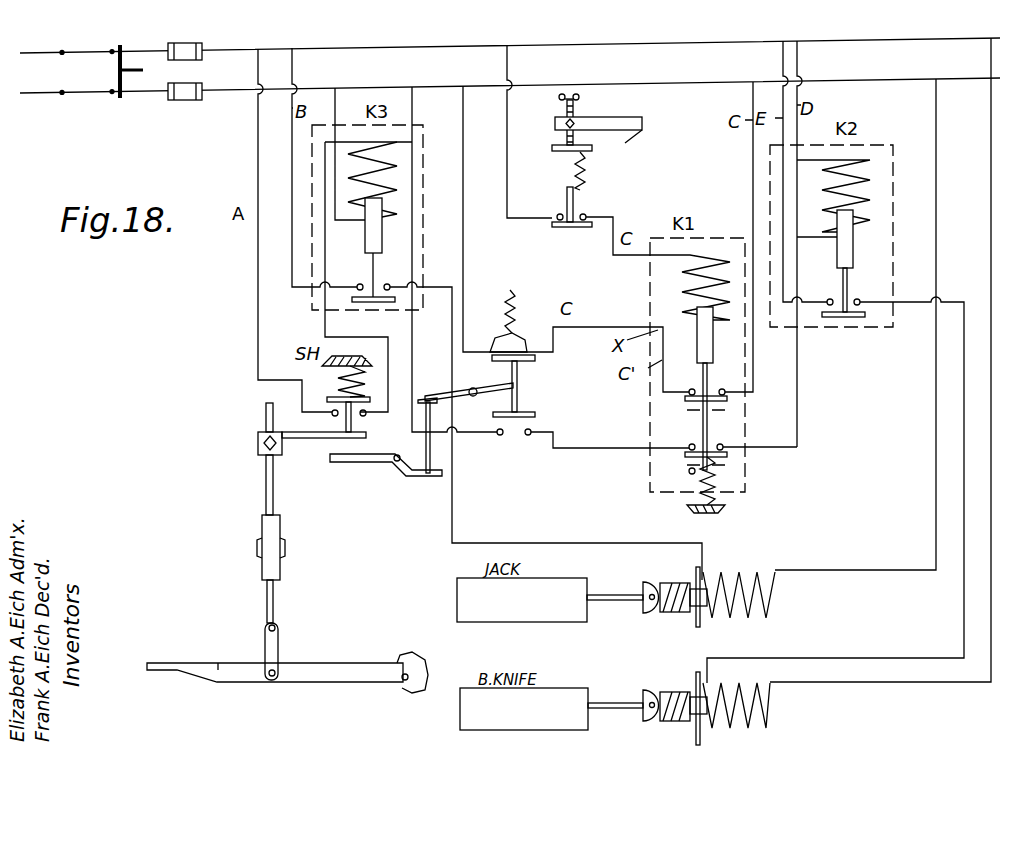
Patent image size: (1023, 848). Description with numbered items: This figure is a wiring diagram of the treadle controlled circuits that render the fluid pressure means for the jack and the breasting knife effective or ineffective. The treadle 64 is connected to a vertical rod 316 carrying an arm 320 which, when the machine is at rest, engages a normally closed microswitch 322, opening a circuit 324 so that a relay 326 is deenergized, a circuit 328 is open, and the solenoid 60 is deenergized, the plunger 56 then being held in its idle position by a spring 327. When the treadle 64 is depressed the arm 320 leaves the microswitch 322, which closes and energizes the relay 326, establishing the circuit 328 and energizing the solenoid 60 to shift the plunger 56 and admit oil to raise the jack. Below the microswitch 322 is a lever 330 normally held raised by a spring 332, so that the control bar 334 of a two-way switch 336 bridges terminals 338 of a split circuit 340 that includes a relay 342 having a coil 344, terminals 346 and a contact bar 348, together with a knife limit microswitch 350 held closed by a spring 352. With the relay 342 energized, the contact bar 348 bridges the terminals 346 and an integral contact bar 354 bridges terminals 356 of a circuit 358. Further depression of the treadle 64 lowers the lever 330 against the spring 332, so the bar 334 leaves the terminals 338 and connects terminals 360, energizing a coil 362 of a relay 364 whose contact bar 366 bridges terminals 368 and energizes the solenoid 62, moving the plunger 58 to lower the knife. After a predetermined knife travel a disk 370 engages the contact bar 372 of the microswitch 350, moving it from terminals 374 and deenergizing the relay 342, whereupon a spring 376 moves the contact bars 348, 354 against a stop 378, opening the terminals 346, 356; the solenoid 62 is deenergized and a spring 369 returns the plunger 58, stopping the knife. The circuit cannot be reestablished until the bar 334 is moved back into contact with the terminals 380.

The circuit 324 is at (258, 207).
The circuit 328 is at (292, 135).
The relay 326 is at (423, 203).
The terminals 360 is at (500, 436).
The microswitch 322 is at (382, 383).
The arm 320 is at (330, 440).
The vertical rod 316 is at (268, 484).
The treadle 64 is at (310, 683).
The lever 330 is at (357, 465).
The terminals 338 is at (498, 321).
The spring 332 is at (515, 308).
The control bar 334 is at (536, 359).
The split circuit 340 is at (507, 103).
The two-way switch 336 is at (538, 453).
The circuit 358 is at (603, 450).
The terminals 380 is at (644, 129).
The disk 370 is at (588, 151).
The spring 352 is at (575, 180).
The terminals 374 is at (568, 215).
The contact bar 372 is at (555, 229).
The knife limit microswitch 350 is at (527, 239).
The relay 342 is at (660, 238).
The coil 344 is at (698, 254).
The terminals 346 is at (722, 389).
The contact bar 348 is at (728, 400).
The terminals 356 is at (700, 447).
The contact bar 354 is at (695, 468).
The spring 376 is at (716, 485).
The stop 378 is at (692, 474).
The relay 364 is at (870, 145).
The coil 362 is at (870, 160).
The terminals 368 is at (858, 299).
The contact bar 366 is at (843, 318).
The plunger 56 is at (612, 601).
The spring 369 is at (676, 613).
The solenoid 60 is at (784, 613).
The plunger 58 is at (608, 709).
The spring 327 is at (676, 722).
The solenoid 62 is at (749, 739).